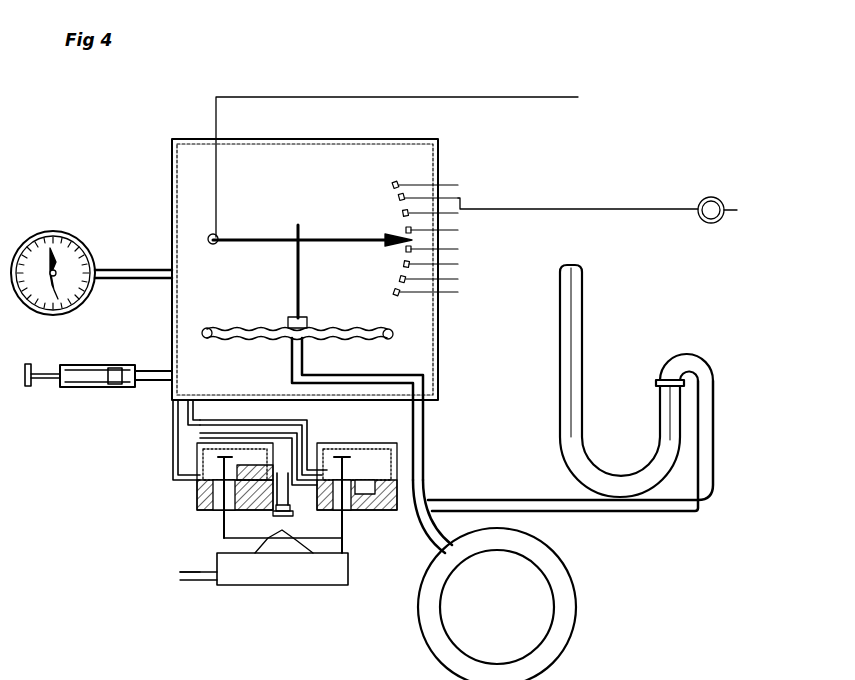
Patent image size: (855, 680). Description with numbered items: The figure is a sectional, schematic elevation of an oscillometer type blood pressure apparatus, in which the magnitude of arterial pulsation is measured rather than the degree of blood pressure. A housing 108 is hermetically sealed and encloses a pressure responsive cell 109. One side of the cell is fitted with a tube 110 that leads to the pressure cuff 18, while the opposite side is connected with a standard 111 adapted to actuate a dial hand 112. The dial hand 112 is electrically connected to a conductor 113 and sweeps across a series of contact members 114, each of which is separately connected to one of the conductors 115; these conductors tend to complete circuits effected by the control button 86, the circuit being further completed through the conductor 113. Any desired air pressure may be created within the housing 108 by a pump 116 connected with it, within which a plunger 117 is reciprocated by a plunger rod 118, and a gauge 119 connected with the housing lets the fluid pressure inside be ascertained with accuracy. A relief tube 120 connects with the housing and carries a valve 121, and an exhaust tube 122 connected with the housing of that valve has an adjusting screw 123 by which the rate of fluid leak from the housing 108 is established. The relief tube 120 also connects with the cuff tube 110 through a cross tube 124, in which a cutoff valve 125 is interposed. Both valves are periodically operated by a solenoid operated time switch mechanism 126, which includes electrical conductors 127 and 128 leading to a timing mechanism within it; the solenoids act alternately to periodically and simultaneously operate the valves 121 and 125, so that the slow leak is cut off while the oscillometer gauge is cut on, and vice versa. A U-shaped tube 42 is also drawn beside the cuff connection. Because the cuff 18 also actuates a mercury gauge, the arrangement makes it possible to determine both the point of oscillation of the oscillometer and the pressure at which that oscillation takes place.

The housing 108 is at (200, 139).
The conductor 113 is at (413, 97).
The dial hand 112 is at (318, 240).
The standard 111 is at (302, 297).
The pressure responsive cell 109 is at (262, 330).
The tube 110 is at (360, 375).
The contact members 114 is at (394, 186).
The conductors 115 is at (593, 209).
The control button 86 is at (714, 198).
The gauge 119 is at (74, 232).
The pump 116 is at (88, 358).
The plunger rod 118 is at (52, 382).
The plunger 117 is at (105, 386).
The relief tube 120 is at (173, 430).
The cross tube 124 is at (297, 433).
The valve 121 is at (203, 510).
The cutoff valve 125 is at (377, 441).
The exhaust tube 122 is at (292, 493).
The adjusting screw 123 is at (288, 516).
The solenoid operated time switch mechanism 126 is at (282, 572).
The electrical conductor 127 is at (195, 582).
The electrical conductor 128 is at (185, 573).
The U-tube 42 is at (557, 452).
The pressure cuff 18 is at (568, 619).